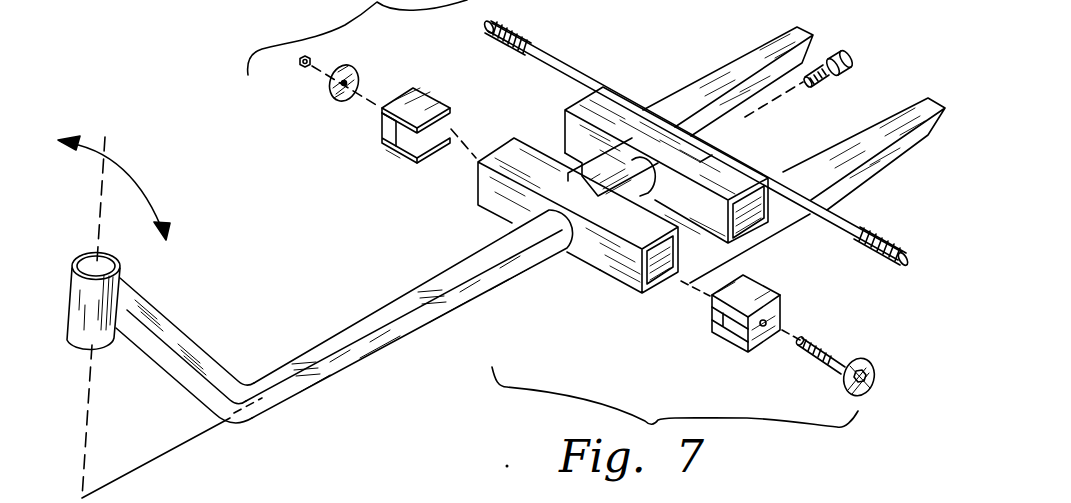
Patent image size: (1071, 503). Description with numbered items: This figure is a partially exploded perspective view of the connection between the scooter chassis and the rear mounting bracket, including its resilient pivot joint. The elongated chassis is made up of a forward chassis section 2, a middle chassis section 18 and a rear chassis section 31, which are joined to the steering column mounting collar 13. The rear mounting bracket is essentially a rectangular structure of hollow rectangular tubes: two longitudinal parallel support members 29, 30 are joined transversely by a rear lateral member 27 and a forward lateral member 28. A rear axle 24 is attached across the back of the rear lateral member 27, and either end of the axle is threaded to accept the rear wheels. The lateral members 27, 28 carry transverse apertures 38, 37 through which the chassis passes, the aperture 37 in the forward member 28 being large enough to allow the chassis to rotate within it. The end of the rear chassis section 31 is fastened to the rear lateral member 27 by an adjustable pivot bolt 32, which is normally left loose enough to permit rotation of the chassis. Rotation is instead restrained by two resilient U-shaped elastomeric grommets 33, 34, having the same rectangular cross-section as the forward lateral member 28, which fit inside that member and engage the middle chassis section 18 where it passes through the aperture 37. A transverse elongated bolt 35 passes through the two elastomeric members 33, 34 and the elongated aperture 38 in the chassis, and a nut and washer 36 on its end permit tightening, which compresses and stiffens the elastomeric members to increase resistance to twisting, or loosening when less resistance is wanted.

The forward chassis section 2 is at (184, 340).
The steering column mounting collar 13 is at (111, 346).
The middle chassis section 18 is at (374, 345).
The rear axle 24 is at (838, 235).
The rear lateral member 27 is at (592, 98).
The forward lateral member 28 is at (612, 268).
The longitudinal parallel support member 29 is at (743, 57).
The longitudinal parallel support member 30 is at (878, 163).
The rear chassis section 31 is at (631, 172).
The adjustable pivot bolt 32 is at (832, 80).
The resilient U-shaped elastomeric grommet 33 is at (733, 333).
The resilient U-shaped elastomeric grommet 34 is at (395, 143).
The transverse elongated bolt 35 is at (836, 367).
The nut and washer 36 is at (306, 70).
The transverse aperture 37 is at (574, 231).
The elongated aperture 38 is at (702, 160).